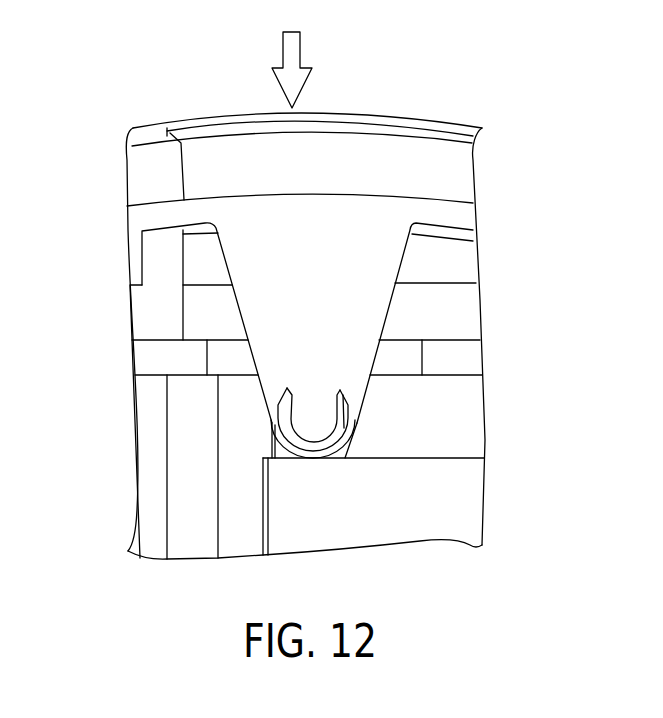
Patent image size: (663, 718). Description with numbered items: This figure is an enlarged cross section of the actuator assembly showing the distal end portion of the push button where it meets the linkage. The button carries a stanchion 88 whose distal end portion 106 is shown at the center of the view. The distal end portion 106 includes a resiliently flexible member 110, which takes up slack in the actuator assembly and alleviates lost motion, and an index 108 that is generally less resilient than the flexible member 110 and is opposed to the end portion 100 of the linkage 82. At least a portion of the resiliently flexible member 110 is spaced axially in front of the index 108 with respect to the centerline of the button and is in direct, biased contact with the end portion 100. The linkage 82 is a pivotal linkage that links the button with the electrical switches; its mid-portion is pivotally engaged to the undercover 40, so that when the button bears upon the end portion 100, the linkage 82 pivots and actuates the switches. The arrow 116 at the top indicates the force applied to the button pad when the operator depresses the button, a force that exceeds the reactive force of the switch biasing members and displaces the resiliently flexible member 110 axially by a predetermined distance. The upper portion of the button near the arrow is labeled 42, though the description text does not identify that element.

The arrow 116 is at (300, 52).
The upper housing portion 42 is at (495, 168).
The undercover 40 is at (505, 408).
The stanchion 88 is at (390, 393).
The distal end portion 106 is at (250, 360).
The index 108 is at (287, 417).
The resiliently flexible member 110 is at (360, 422).
The end portion 100 is at (263, 507).
The linkage 82 is at (420, 540).